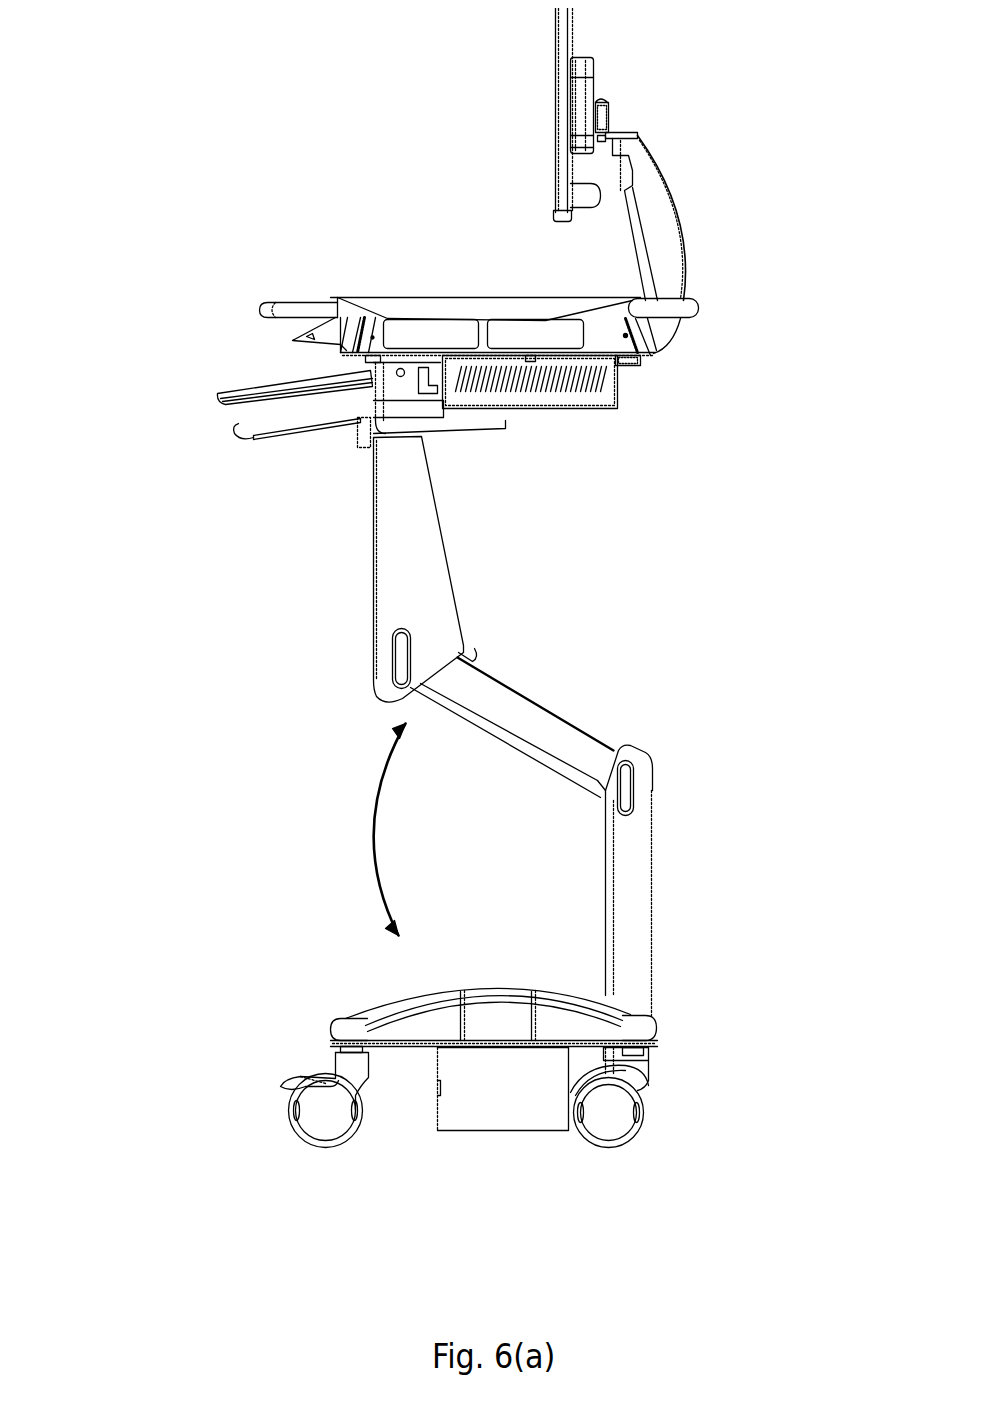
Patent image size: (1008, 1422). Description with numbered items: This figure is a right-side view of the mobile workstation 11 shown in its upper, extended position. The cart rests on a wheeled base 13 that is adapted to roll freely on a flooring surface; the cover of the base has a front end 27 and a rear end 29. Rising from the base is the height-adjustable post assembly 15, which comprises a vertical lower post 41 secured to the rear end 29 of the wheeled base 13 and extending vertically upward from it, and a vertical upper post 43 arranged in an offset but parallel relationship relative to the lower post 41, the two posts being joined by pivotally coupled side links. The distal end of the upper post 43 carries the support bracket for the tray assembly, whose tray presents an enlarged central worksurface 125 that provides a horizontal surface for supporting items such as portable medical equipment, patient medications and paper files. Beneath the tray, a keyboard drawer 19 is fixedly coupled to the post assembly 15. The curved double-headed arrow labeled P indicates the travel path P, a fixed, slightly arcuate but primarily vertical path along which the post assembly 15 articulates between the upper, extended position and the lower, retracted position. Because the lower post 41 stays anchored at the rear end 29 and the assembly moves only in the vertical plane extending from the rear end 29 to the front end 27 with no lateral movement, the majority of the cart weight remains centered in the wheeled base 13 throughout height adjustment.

The mobile workstation 11 is at (205, 313).
The central worksurface 125 is at (485, 297).
The keyboard drawer 19 is at (665, 337).
The upper post 43 is at (437, 568).
The height-adjustable post assembly 15 is at (592, 726).
The lower post 41 is at (642, 863).
The wheeled base 13 is at (487, 988).
The front end 27 is at (330, 1028).
The rear end 29 is at (655, 1042).
The travel path P is at (375, 834).